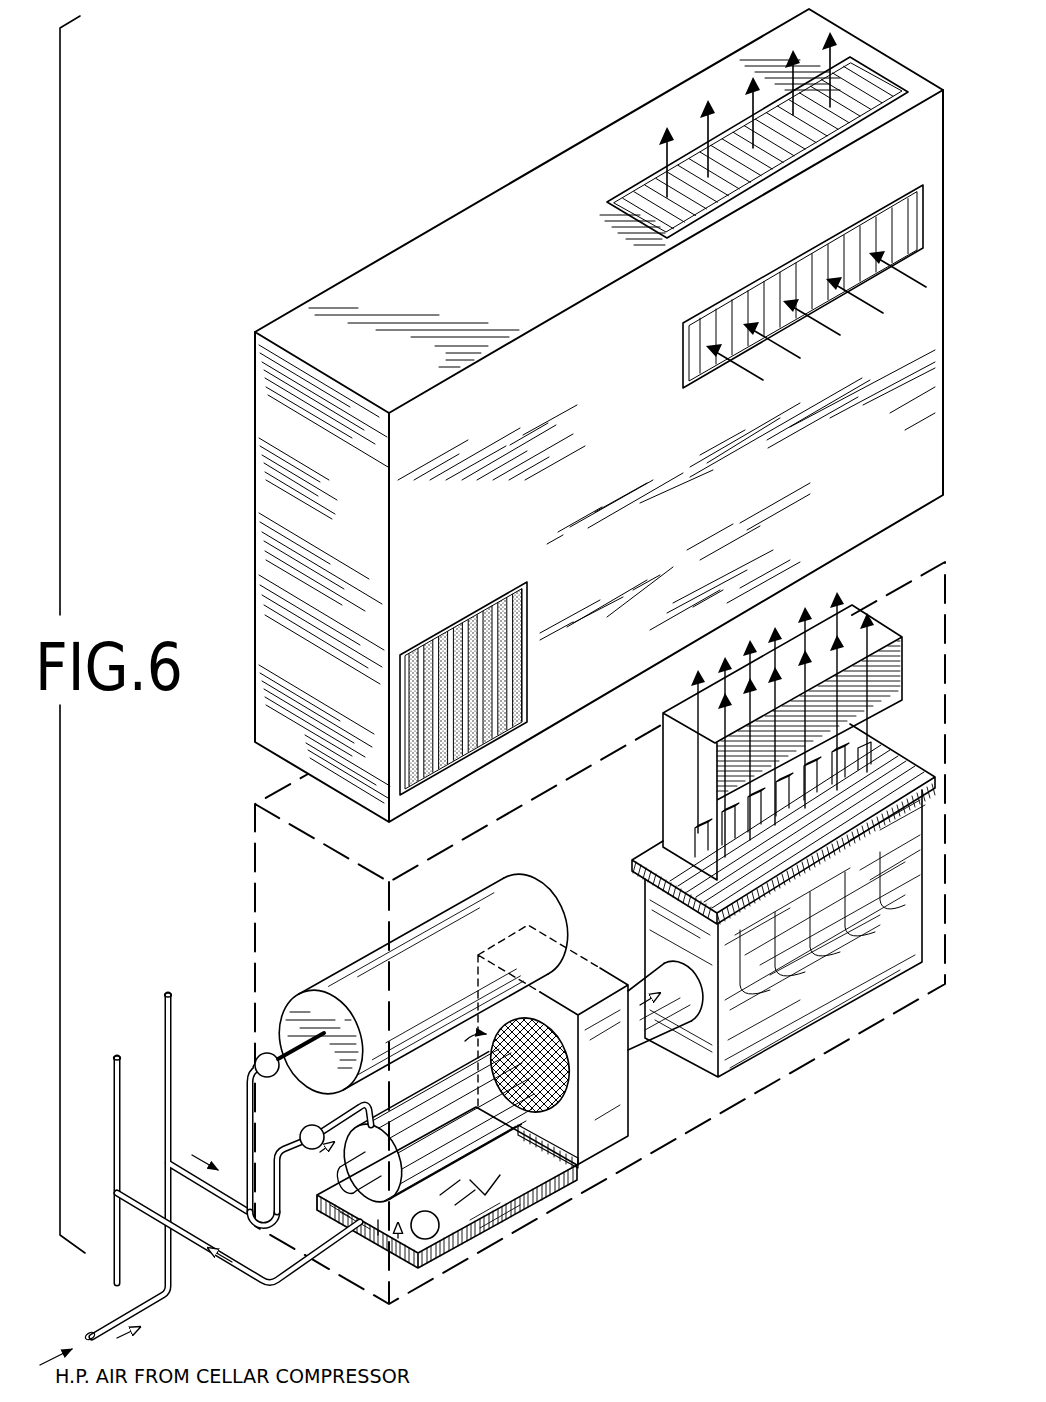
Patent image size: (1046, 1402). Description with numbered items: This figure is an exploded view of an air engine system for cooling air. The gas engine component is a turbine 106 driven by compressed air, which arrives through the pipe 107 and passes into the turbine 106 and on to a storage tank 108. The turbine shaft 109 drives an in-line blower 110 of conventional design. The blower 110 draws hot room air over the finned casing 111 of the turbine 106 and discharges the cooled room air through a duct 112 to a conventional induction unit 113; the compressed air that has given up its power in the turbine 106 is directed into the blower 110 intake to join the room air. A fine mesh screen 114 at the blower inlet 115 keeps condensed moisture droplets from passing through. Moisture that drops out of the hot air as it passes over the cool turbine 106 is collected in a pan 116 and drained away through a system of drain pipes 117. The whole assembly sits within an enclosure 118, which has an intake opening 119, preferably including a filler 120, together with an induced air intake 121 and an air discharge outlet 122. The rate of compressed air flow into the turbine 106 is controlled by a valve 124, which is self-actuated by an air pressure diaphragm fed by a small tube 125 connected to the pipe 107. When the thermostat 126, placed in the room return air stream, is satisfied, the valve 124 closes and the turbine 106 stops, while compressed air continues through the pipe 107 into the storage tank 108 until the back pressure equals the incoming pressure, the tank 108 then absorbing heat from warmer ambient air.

The turbine 106 is at (447, 1194).
The pipe 107 is at (204, 1182).
The storage tank 108 is at (533, 918).
The turbine shaft 109 is at (535, 1130).
The in-line blower 110 is at (652, 1127).
The finned casing 111 is at (503, 1195).
The duct 112 is at (660, 976).
The induction unit 113 is at (860, 1004).
The fine mesh screen 114 is at (557, 1072).
The inlet 115 is at (545, 1028).
The pan 116 is at (500, 1180).
The drain pipes 117 is at (272, 1287).
The enclosure 118 is at (248, 328).
The intake opening 119 is at (421, 648).
The filler 120 is at (508, 683).
The induced air intake 121 is at (688, 343).
The air discharge outlet 122 is at (866, 70).
The valve 124 is at (328, 1105).
The small tube 125 is at (316, 1103).
The thermostat 126 is at (424, 1240).